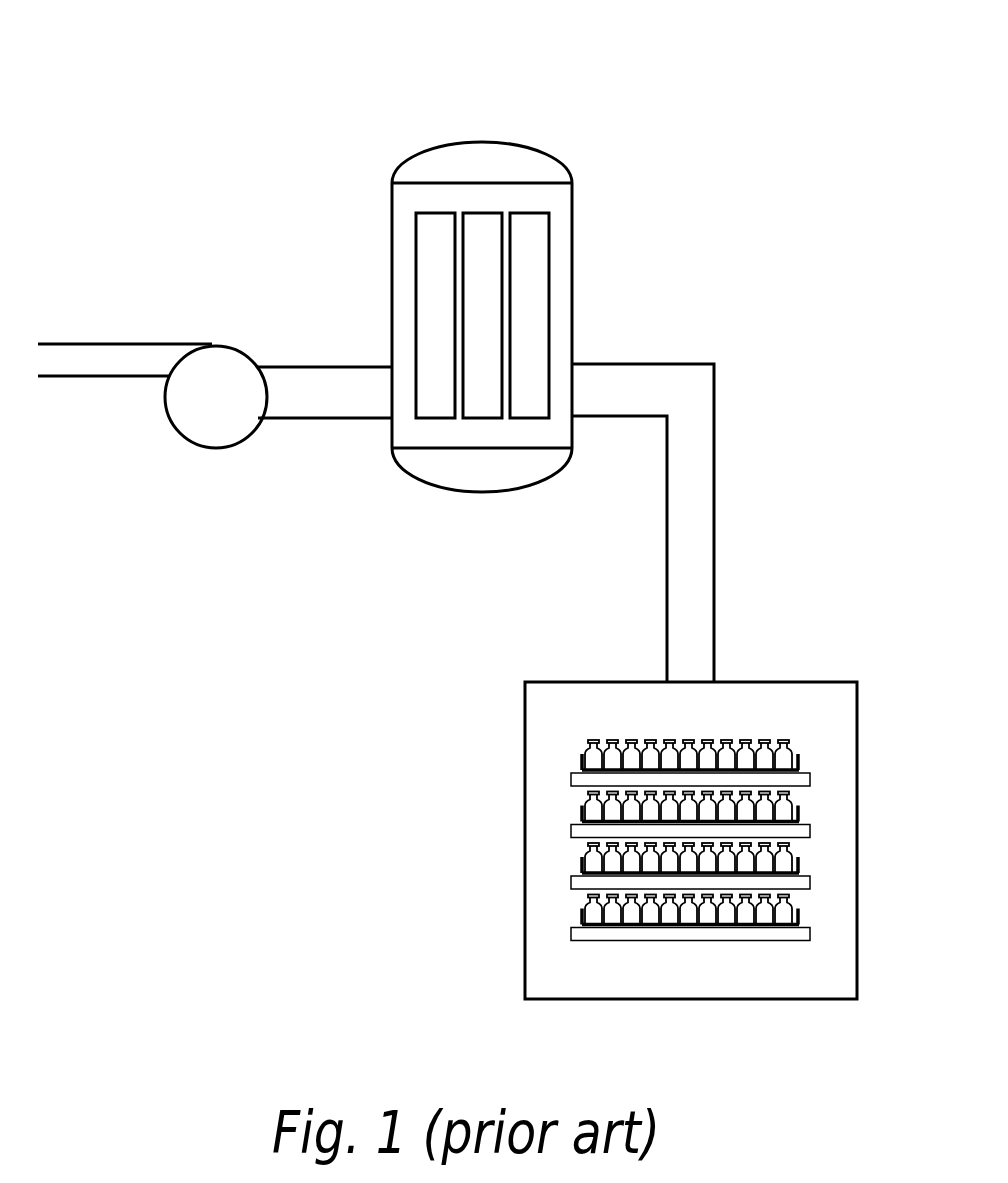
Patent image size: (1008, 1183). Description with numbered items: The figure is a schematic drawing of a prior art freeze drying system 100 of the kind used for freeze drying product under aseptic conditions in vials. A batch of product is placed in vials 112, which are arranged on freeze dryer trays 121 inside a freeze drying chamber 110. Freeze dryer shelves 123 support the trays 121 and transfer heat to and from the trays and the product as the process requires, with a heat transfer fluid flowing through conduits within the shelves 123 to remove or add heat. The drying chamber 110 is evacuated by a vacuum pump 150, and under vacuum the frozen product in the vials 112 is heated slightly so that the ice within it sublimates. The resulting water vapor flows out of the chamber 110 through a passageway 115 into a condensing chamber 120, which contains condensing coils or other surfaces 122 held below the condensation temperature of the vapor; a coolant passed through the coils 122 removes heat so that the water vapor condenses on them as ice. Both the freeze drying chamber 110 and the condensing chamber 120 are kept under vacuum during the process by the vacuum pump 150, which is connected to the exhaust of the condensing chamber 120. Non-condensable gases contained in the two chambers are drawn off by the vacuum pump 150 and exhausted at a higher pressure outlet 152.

The freeze drying system 100 is at (438, 62).
The freeze drying chamber 110 is at (525, 942).
The vials 112 is at (747, 740).
The passageway 115 is at (715, 526).
The condensing chamber 120 is at (573, 212).
The freeze dryer trays 121 is at (580, 756).
The condensing coils 122 is at (415, 253).
The freeze dryer shelves 123 is at (571, 779).
The vacuum pump 150 is at (217, 344).
The higher pressure outlet 152 is at (123, 357).